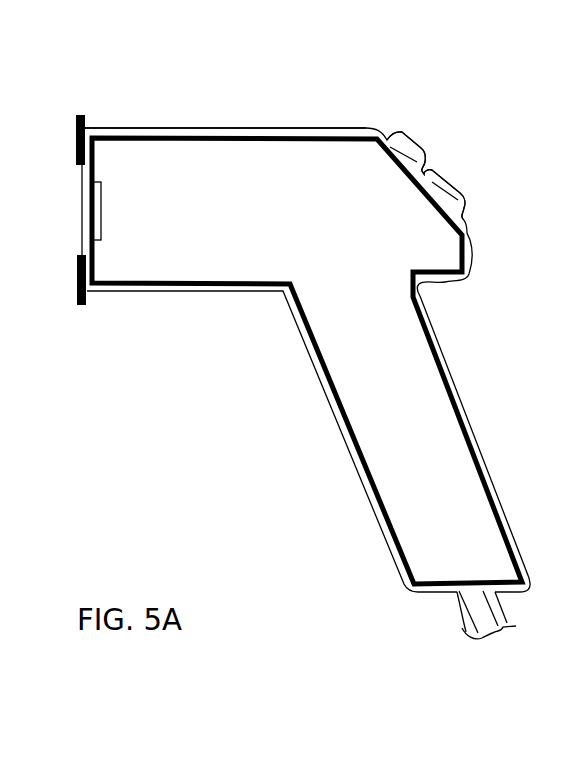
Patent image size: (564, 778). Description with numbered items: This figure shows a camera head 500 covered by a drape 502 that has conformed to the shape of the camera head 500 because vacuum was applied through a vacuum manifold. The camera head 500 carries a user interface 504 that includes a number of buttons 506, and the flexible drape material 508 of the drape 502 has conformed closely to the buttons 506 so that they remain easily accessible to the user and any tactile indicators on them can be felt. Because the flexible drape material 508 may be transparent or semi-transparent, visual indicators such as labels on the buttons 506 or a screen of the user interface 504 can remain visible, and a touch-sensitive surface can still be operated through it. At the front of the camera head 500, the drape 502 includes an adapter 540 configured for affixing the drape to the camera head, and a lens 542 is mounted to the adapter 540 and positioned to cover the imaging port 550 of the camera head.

The camera head 500 is at (248, 210).
The drape 502 is at (148, 90).
The user interface 504 is at (465, 138).
The buttons 506 is at (418, 147).
The flexible drape material 508 is at (287, 127).
The adapter 540 is at (78, 298).
The lens 542 is at (82, 213).
The imaging port 550 is at (103, 202).